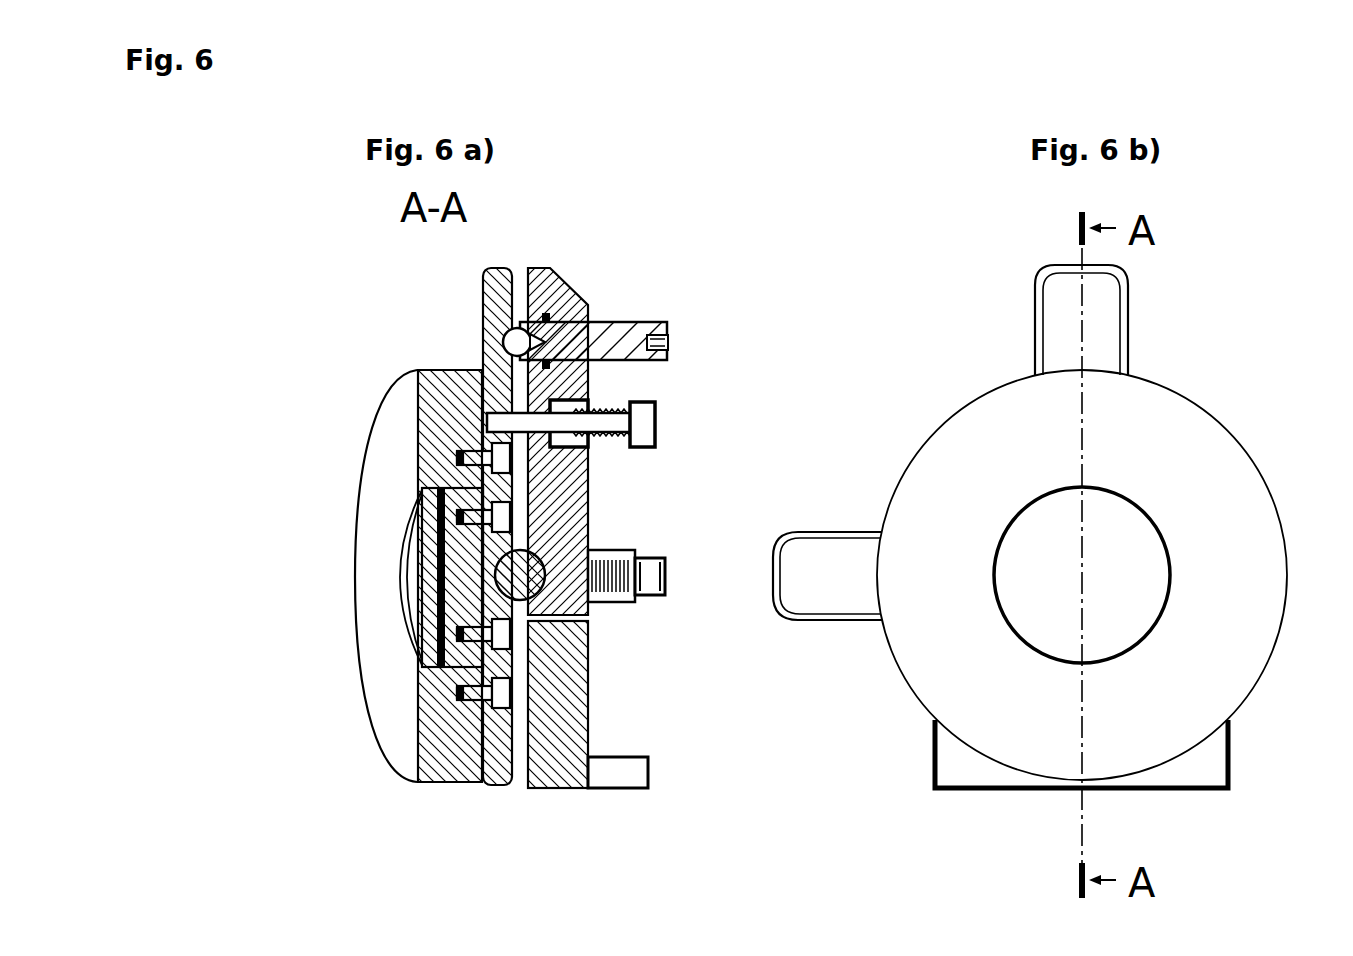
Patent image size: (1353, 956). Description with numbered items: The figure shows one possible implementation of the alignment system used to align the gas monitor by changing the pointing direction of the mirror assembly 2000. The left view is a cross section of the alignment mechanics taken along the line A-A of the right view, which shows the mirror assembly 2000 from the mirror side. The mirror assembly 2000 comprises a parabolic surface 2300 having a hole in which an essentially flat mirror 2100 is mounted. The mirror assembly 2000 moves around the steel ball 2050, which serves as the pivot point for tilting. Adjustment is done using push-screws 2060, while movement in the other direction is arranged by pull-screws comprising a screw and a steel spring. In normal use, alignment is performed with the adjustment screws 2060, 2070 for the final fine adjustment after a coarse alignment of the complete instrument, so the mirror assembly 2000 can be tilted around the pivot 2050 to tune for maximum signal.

In FIG. 6a, the mirror assembly 2000 is at (530, 554).
In FIG. 6a, the parabolic surface 2300 is at (385, 460).
In FIG. 6b, the parabolic surface 2300 is at (1210, 453).
In FIG. 6a, the flat mirror 2100 is at (417, 587).
In FIG. 6b, the flat mirror 2100 is at (1140, 600).
In FIG. 6a, the steel ball 2050 is at (520, 575).
In FIG. 6a, the push-screw 2060 is at (663, 317).
In FIG. 6a, the adjustment screw 2070 is at (663, 420).